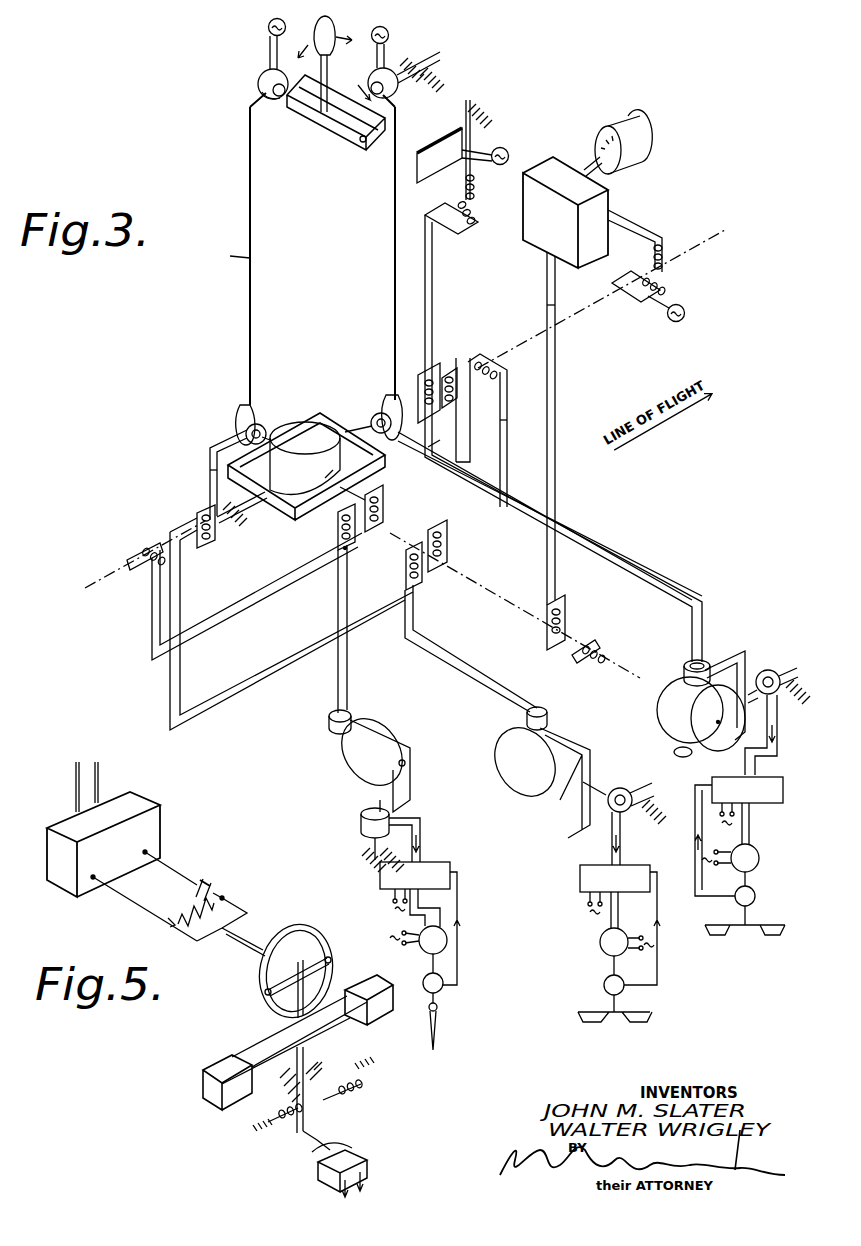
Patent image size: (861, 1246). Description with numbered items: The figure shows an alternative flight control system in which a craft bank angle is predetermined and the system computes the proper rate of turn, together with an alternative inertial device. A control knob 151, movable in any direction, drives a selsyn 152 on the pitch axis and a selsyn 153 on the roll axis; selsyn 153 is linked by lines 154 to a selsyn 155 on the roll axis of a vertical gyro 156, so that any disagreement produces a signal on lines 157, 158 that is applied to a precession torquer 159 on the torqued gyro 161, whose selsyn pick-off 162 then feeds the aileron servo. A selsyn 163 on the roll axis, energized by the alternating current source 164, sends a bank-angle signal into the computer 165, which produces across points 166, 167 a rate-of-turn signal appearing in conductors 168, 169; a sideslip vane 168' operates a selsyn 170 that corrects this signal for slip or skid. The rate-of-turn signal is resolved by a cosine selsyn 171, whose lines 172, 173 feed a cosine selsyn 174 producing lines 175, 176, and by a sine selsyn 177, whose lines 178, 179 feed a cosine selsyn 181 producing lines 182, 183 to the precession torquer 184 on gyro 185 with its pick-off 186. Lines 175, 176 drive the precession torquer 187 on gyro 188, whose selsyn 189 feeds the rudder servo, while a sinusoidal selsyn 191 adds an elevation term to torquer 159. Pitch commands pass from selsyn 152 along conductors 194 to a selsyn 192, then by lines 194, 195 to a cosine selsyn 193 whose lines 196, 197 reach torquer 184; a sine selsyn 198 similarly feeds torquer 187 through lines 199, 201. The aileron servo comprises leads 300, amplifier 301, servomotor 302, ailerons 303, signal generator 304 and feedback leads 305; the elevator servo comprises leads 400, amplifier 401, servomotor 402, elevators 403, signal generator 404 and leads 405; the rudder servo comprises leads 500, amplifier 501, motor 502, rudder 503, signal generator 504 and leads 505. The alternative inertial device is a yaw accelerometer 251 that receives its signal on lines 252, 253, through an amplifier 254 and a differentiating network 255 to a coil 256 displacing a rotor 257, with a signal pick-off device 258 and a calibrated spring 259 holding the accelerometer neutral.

In FIG. 3, the control knob 151 is at (334, 37).
In FIG. 3, the selsyn 152 is at (258, 88).
In FIG. 3, the selsyn 153 is at (405, 92).
In FIG. 3, the lines 154 is at (393, 287).
In FIG. 3, the selsyn 155 is at (384, 410).
In FIG. 3, the vertical gyro 156 is at (290, 430).
In FIG. 3, the line 157 is at (403, 447).
In FIG. 3, the line 158 is at (430, 448).
In FIG. 3, the precession torquer 159 is at (710, 665).
In FIG. 3, the torqued gyro 161 is at (658, 703).
In FIG. 3, the selsyn pick-off 162 is at (768, 670).
In FIG. 3, the selsyn 163 is at (668, 291).
In FIG. 3, the alternating current source 164 is at (268, 31).
In FIG. 3, the computer 165 is at (606, 208).
In FIG. 3, the output point 166 is at (547, 250).
In FIG. 3, the output point 167 is at (565, 254).
In FIG. 3, the conductor 168 is at (563, 438).
In FIG. 3, the vane 168' is at (450, 150).
In FIG. 3, the conductor 169 is at (556, 308).
In FIG. 3, the selsyn 170 is at (453, 193).
In FIG. 3, the cosine selsyn 171 is at (432, 370).
In FIG. 3, the line 172 is at (470, 440).
In FIG. 3, the line 173 is at (458, 422).
In FIG. 3, the cosine selsyn 174 is at (357, 534).
In FIG. 3, the line 175 is at (348, 571).
In FIG. 3, the line 176 is at (349, 590).
In FIG. 3, the sine selsyn 177 is at (458, 386).
In FIG. 3, the line 178 is at (506, 420).
In FIG. 3, the line 179 is at (506, 406).
In FIG. 3, the cosine selsyn 181 is at (433, 581).
In FIG. 3, the line 182 is at (420, 629).
In FIG. 3, the line 183 is at (420, 608).
In FIG. 3, the precession torquer 184 is at (562, 696).
In FIG. 3, the gyro 185 is at (566, 736).
In FIG. 3, the selsyn pick-off 186 is at (630, 790).
In FIG. 3, the precession torquer 187 is at (330, 723).
In FIG. 3, the gyro 188 is at (406, 746).
In FIG. 3, the selsyn 189 is at (360, 820).
In FIG. 3, the selsyn 191 is at (572, 633).
In FIG. 3, the selsyn 192 is at (243, 415).
In FIG. 3, the cosine selsyn 193 is at (197, 512).
In FIG. 3, the conductors 194 is at (250, 258).
In FIG. 3, the line 195 is at (210, 471).
In FIG. 3, the line 196 is at (185, 657).
In FIG. 3, the line 197 is at (175, 683).
In FIG. 3, the sine selsyn 198 is at (157, 543).
In FIG. 3, the line 199 is at (302, 574).
In FIG. 3, the line 201 is at (283, 593).
In FIG. 3, the leads 300 is at (745, 765).
In FIG. 3, the amplifier 301 is at (749, 812).
In FIG. 3, the servomotor 302 is at (756, 855).
In FIG. 3, the ailerons 303 is at (770, 934).
In FIG. 3, the signal generator 304 is at (751, 893).
In FIG. 3, the leads 305 is at (722, 899).
In FIG. 3, the leads 400 is at (608, 835).
In FIG. 3, the amplifier 401 is at (578, 870).
In FIG. 3, the servomotor 402 is at (600, 943).
In FIG. 3, the elevators 403 is at (611, 1030).
In FIG. 3, the signal generator 404 is at (604, 985).
In FIG. 3, the leads 405 is at (660, 978).
In FIG. 3, the leads 500 is at (420, 838).
In FIG. 3, the amplifier 501 is at (380, 880).
In FIG. 3, the motor 502 is at (448, 940).
In FIG. 3, the rudder 503 is at (440, 1032).
In FIG. 3, the signal generator 504 is at (445, 988).
In FIG. 3, the leads 505 is at (459, 898).
In FIG. 5, the yaw accelerometer 251 is at (226, 1067).
In FIG. 5, the line 252 is at (76, 791).
In FIG. 5, the line 253 is at (100, 785).
In FIG. 5, the amplifier 254 is at (153, 831).
In FIG. 5, the differentiating network 255 is at (270, 874).
In FIG. 5, the coil 256 is at (327, 946).
In FIG. 5, the rotor 257 is at (316, 970).
In FIG. 5, the signal pick-off device 258 is at (366, 1155).
In FIG. 5, the calibrated spring 259 is at (330, 1099).